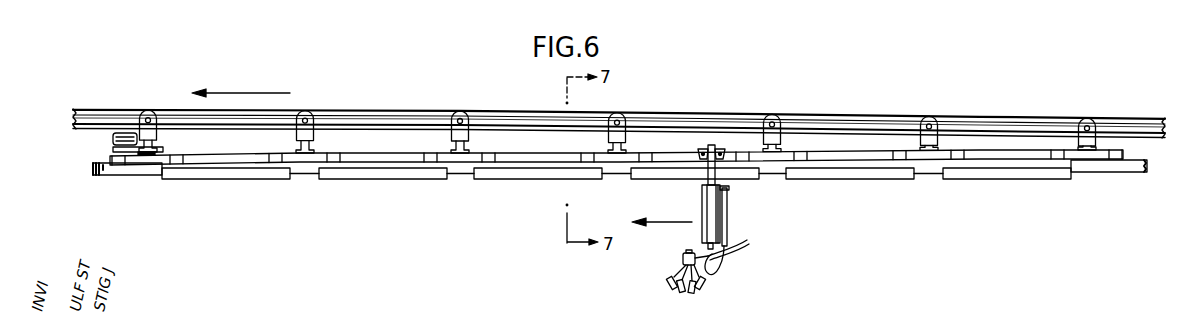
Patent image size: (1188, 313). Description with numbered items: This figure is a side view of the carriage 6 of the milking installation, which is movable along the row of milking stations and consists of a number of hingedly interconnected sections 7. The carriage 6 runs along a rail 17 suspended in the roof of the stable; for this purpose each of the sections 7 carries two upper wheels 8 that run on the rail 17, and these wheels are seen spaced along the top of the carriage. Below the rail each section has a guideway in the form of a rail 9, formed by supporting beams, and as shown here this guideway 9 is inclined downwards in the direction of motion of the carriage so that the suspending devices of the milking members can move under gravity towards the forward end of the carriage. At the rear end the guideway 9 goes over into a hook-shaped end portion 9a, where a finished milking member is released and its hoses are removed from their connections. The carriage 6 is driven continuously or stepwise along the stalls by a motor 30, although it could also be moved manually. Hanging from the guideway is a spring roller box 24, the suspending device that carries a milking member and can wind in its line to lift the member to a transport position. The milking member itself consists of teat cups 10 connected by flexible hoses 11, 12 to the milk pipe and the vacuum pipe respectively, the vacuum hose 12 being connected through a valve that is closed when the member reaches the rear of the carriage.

The rail 17 is at (355, 118).
The upper wheels 8 is at (457, 111).
The sections 7 is at (582, 160).
The motor 30 is at (113, 150).
The rail (guideway) 9 is at (137, 170).
The hook-shaped end portion 9a is at (93, 168).
The carriage 6 is at (347, 188).
The spring roller box 24 is at (713, 203).
The flexible hose (milk hose) 11 is at (748, 228).
The flexible hose (vacuum hose) 12 is at (742, 248).
The teat cups 10 is at (697, 287).